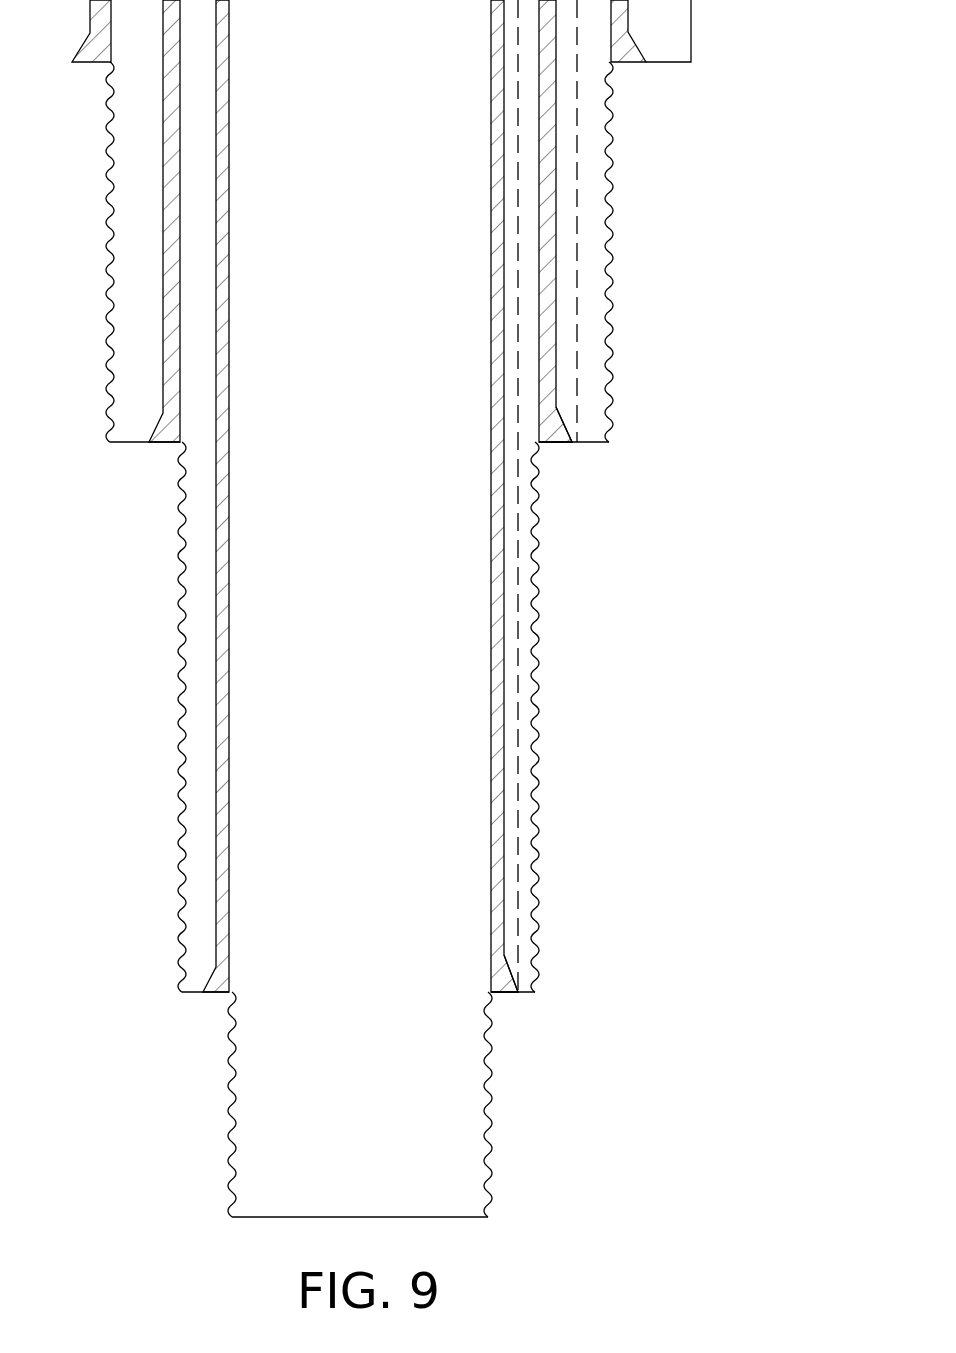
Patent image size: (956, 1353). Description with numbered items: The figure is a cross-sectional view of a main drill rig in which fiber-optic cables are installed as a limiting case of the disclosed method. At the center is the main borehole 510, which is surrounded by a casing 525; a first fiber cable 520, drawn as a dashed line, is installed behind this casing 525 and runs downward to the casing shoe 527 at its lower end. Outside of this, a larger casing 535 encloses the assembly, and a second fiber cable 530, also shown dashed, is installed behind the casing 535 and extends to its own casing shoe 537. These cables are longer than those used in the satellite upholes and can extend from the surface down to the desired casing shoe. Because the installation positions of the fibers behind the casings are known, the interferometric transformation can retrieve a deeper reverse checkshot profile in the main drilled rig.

The main borehole 510 is at (280, 883).
The first fiber cable 520 is at (465, 496).
The casing 525 is at (475, 883).
The casing shoe 527 is at (503, 957).
The second fiber cable 530 is at (436, 221).
The casing 535 is at (538, 288).
The casing shoe 537 is at (570, 438).